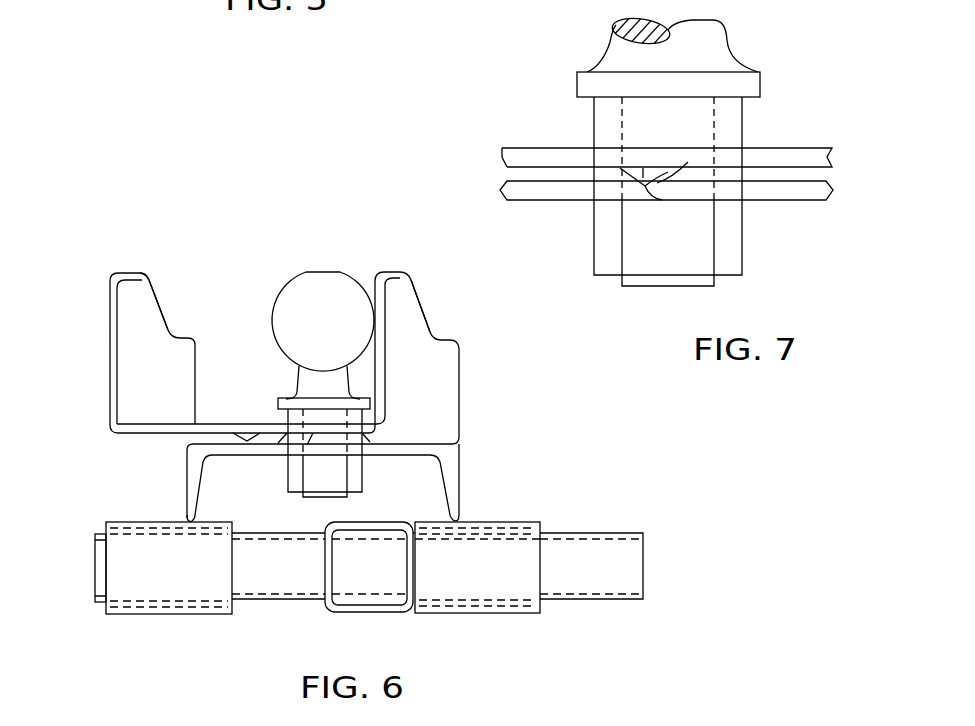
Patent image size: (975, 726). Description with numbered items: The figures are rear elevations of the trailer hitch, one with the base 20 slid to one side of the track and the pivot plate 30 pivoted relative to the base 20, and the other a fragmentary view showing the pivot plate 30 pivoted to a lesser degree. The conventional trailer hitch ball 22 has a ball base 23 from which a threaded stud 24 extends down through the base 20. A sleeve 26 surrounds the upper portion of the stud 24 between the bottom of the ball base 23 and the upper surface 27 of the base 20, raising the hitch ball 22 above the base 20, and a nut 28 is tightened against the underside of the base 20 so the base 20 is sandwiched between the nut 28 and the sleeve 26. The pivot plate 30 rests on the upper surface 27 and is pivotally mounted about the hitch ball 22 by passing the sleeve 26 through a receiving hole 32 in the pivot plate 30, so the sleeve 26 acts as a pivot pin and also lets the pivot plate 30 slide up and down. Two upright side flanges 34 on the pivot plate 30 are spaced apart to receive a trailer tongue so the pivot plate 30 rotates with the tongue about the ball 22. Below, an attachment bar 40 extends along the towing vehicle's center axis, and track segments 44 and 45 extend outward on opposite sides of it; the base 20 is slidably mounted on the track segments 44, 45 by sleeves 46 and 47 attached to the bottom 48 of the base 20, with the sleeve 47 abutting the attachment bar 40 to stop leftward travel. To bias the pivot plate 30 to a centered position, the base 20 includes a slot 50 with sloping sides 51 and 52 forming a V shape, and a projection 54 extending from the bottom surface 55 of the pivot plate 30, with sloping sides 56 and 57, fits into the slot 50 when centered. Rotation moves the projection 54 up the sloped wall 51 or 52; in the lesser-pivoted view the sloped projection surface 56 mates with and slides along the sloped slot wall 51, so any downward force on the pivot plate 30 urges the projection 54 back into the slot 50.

In FIG. 7, the base 20 is at (828, 190).
In FIG. 6, the base 20 is at (192, 473).
In FIG. 7, the trailer hitch ball 22 is at (672, 42).
In FIG. 6, the trailer hitch ball 22 is at (318, 283).
In FIG. 7, the ball base 23 is at (577, 85).
In FIG. 6, the ball base 23 is at (280, 400).
In FIG. 7, the threaded stud 24 is at (637, 286).
In FIG. 7, the sleeve 26 is at (745, 107).
In FIG. 6, the sleeve 26 is at (362, 417).
In FIG. 6, the upper surface 27 is at (438, 443).
In FIG. 7, the nut 28 is at (730, 265).
In FIG. 7, the pivot plate 30 is at (518, 155).
In FIG. 7, the receiving hole 32 is at (745, 158).
In FIG. 6, the upright side flanges 34 is at (130, 300).
In FIG. 6, the attachment bar 40 is at (350, 608).
In FIG. 6, the track segment 44 is at (95, 568).
In FIG. 6, the track segment 45 is at (610, 548).
In FIG. 6, the sleeve 46 is at (157, 593).
In FIG. 6, the sleeve 47 is at (482, 592).
In FIG. 6, the bottom 48 is at (197, 513).
In FIG. 7, the slot 50 is at (677, 192).
In FIG. 6, the slot 50 is at (325, 452).
In FIG. 7, the sloping side 51 is at (647, 193).
In FIG. 7, the sloping side 52 is at (692, 197).
In FIG. 7, the projection 54 is at (643, 175).
In FIG. 6, the projection 54 is at (250, 433).
In FIG. 7, the bottom surface 55 is at (812, 167).
In FIG. 6, the bottom surface 55 is at (157, 435).
In FIG. 7, the sloping side 56 is at (623, 171).
In FIG. 7, the sloping side 57 is at (655, 182).